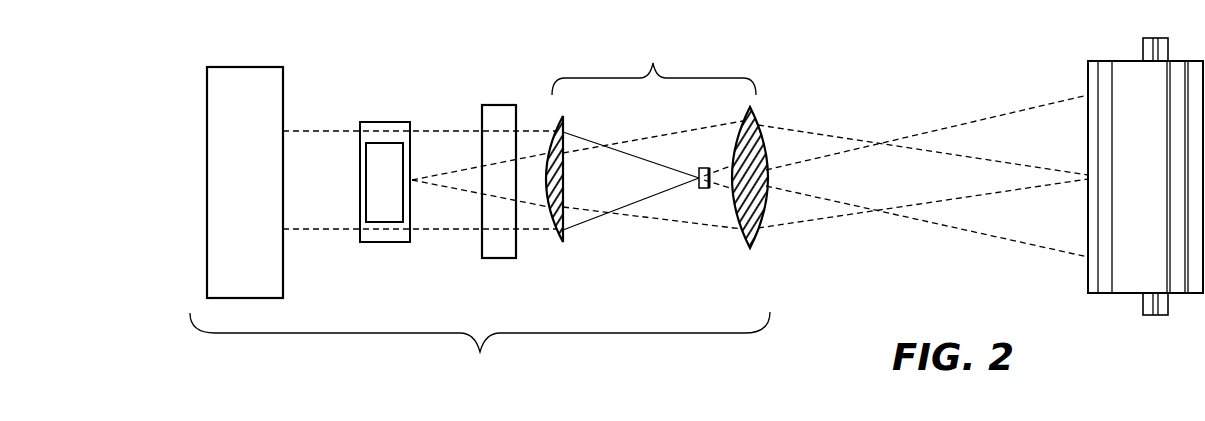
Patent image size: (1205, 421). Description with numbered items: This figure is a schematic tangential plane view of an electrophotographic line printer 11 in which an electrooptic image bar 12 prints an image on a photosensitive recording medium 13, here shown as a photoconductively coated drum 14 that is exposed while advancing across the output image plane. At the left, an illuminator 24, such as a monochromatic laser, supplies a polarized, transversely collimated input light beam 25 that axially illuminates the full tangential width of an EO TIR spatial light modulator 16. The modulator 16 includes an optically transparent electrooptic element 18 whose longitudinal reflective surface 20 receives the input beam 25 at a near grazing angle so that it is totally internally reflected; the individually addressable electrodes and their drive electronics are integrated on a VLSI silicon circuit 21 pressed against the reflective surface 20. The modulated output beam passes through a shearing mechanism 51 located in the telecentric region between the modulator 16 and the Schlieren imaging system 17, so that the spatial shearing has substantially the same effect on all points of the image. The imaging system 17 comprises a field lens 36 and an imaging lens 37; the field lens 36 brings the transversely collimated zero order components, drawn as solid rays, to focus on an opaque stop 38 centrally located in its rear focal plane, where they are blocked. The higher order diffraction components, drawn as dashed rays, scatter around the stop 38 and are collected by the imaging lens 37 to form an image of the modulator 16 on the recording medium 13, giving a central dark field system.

The electrophotographic line printer 11 is at (210, 40).
The electrooptic image bar 12 is at (480, 346).
The photosensitive recording medium 13 is at (1115, 210).
The photoconductively coated drum 14 is at (1125, 60).
The EO TIR spatial light modulator 16 is at (397, 116).
The Schlieren imaging system 17 is at (654, 68).
The electrooptic element 18 is at (390, 243).
The reflective surface 20 is at (361, 146).
The VLSI silicon circuit 21 is at (387, 177).
The illuminator 24 is at (252, 67).
The input light beam 25 is at (310, 208).
The field lens 36 is at (556, 239).
The imaging lens 37 is at (763, 145).
The opaque stop 38 is at (702, 190).
The shearing mechanism 51 is at (497, 106).